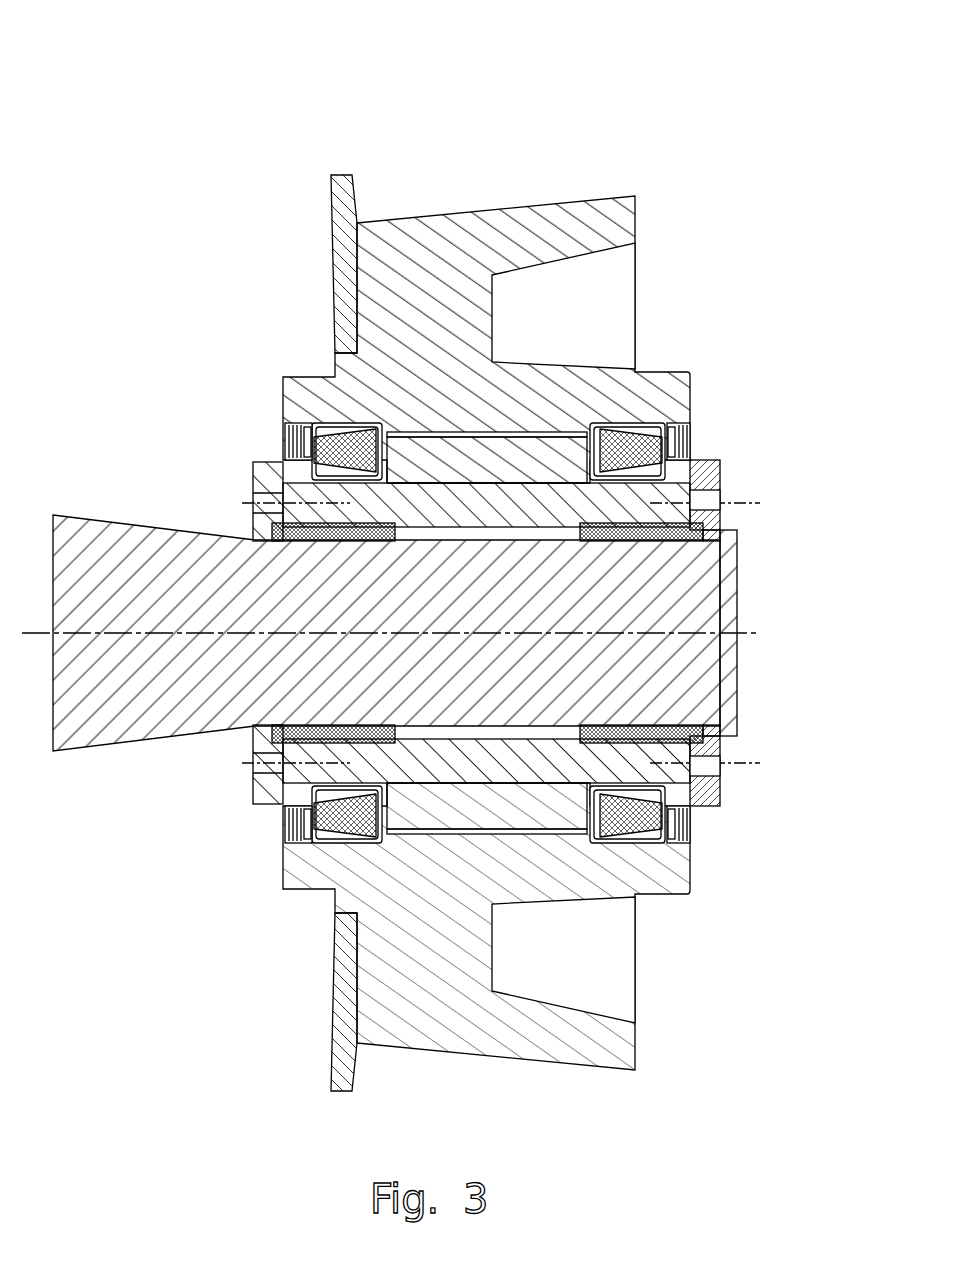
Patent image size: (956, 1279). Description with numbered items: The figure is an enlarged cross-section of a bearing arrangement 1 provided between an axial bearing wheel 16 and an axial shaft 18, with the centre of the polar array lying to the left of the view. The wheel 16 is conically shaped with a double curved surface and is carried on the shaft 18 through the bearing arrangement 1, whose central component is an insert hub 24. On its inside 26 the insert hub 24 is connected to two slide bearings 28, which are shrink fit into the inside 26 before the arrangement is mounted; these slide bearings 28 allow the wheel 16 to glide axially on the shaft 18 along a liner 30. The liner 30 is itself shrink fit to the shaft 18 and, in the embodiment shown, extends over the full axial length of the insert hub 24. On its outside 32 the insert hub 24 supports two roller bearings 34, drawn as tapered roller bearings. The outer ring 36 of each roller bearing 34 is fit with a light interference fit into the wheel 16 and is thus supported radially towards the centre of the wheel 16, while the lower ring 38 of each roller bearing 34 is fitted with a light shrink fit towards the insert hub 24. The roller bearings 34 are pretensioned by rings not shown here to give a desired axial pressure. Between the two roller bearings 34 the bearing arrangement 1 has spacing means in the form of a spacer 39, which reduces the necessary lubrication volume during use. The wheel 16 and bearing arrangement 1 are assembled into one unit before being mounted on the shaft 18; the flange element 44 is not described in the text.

The bearing arrangement 1 is at (202, 438).
The axial bearing wheel 16 is at (478, 203).
The axial shaft 18 is at (158, 528).
The insert hub 24 is at (478, 513).
The inside of the insert hub 26 is at (590, 543).
The slide bearing 28 is at (693, 462).
The liner 30 is at (720, 470).
The outside of the insert hub 32 is at (418, 480).
The roller bearing 34 is at (325, 415).
The outer ring 36 is at (632, 424).
The lower ring 38 is at (672, 433).
The spacer 39 is at (527, 450).
The flange 44 is at (335, 445).